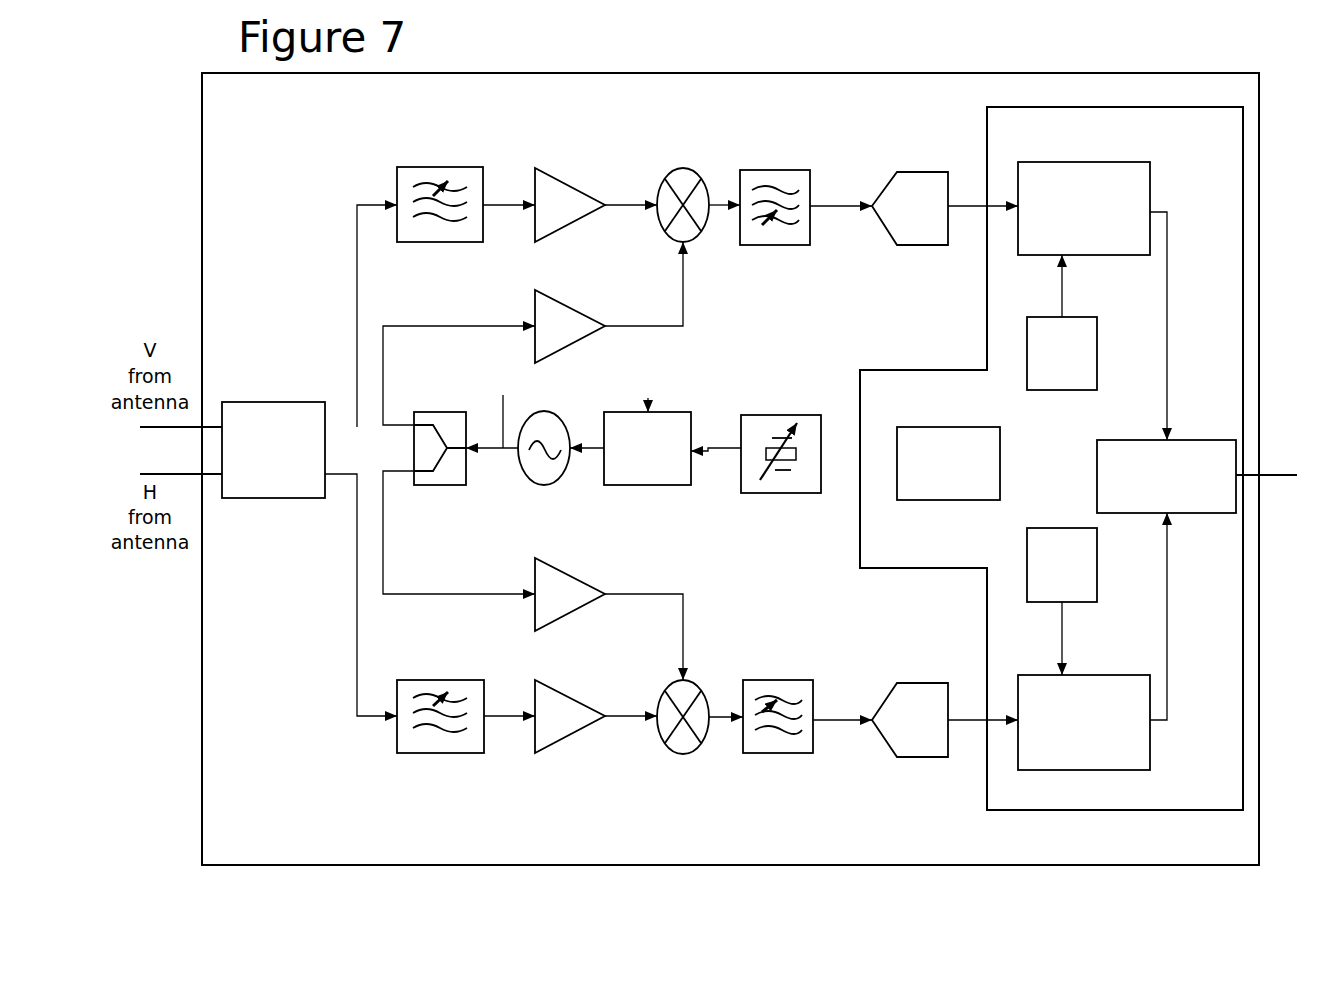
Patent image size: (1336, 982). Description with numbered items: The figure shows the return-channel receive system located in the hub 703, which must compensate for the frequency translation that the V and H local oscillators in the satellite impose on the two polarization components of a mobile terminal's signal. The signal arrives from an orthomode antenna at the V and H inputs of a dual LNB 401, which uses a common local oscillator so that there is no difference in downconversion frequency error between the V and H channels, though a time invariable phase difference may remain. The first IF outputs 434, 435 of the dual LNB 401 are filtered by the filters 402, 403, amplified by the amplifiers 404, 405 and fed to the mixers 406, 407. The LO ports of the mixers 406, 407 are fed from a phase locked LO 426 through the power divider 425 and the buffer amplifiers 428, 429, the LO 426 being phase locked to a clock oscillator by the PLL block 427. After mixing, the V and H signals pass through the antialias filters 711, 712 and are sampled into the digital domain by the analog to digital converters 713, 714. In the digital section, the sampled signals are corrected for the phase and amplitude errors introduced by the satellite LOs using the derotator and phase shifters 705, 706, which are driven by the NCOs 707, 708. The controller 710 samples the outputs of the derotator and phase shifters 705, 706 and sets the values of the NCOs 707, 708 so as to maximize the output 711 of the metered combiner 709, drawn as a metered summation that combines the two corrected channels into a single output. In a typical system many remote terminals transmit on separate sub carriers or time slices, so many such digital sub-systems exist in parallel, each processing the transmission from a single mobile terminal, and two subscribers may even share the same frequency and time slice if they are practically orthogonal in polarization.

The dual LNB 401 is at (232, 432).
The filter 402 is at (466, 179).
The filter 403 is at (466, 742).
The amplifier 404 is at (596, 182).
The amplifier 405 is at (596, 738).
The mixer 406 is at (698, 182).
The mixer 407 is at (700, 742).
The power divider 425 is at (466, 430).
The phase locked LO 426 is at (561, 469).
The PLL block 427 is at (712, 463).
The buffer amplifier 428 is at (533, 333).
The buffer amplifier 429 is at (533, 575).
The first IF output 434 is at (349, 288).
The first IF output 435 is at (354, 621).
The hub 703 is at (621, 72).
The derotator and phase shifter 705 is at (1092, 280).
The derotator and phase shifter 706 is at (1092, 641).
The NCO 707 is at (1068, 322).
The NCO 708 is at (1062, 585).
The metered combiner 709 is at (1166, 455).
The controller 710 is at (948, 444).
The antialias filter 711 is at (1020, 297).
The antialias filter 712 is at (944, 22).
The analog to digital converter 713 is at (945, 181).
The analog to digital converter 714 is at (945, 694).